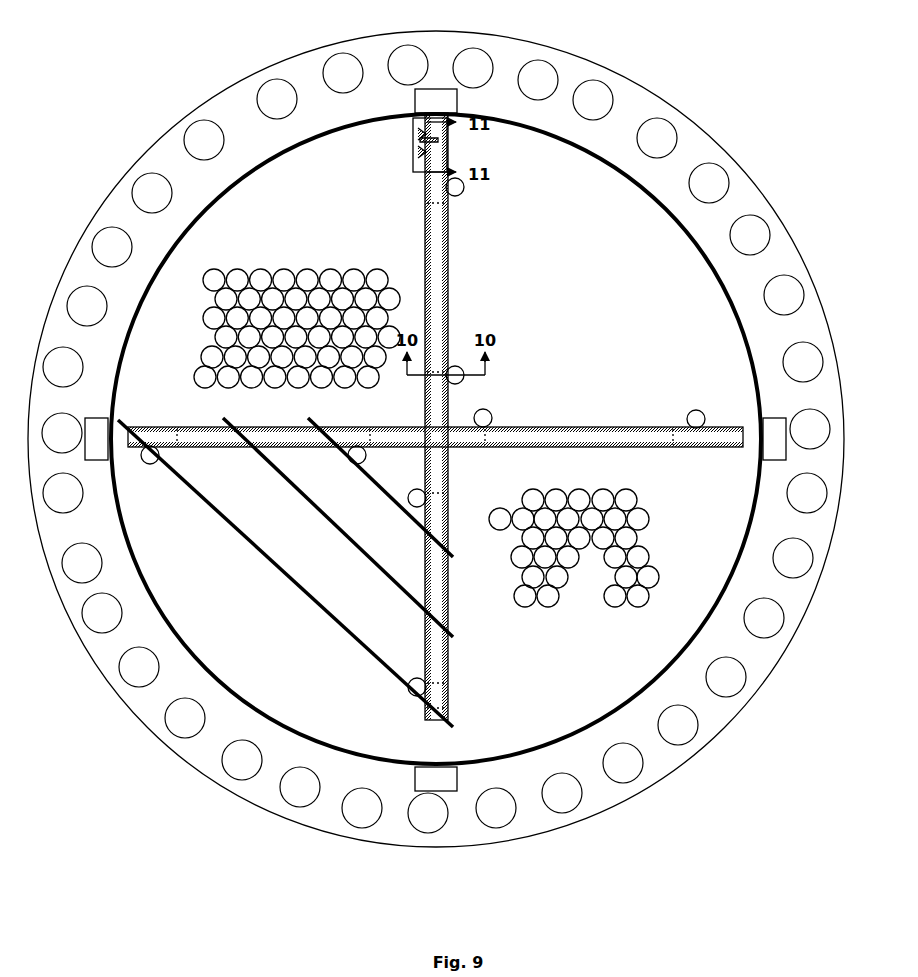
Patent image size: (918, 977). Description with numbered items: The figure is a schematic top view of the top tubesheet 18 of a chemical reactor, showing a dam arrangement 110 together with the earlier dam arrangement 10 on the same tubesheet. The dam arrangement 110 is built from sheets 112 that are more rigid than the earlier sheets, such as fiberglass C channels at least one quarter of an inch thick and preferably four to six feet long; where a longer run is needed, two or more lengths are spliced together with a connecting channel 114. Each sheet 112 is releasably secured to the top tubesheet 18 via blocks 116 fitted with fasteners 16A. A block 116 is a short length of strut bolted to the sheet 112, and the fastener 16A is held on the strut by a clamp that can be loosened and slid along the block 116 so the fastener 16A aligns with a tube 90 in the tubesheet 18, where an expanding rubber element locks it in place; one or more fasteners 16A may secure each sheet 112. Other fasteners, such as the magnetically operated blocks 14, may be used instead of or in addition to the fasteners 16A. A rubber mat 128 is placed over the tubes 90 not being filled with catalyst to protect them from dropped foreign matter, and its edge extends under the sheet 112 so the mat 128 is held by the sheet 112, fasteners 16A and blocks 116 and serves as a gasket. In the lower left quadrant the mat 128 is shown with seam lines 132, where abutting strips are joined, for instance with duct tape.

The dam arrangement 10 is at (333, 113).
The magnetically operated blocks 14 is at (436, 89).
The top tubesheet 18 is at (351, 201).
The tube 90 is at (363, 352).
The dam arrangement 110 is at (481, 331).
The sheet 112 is at (436, 267).
The connecting channel 114 is at (413, 130).
The block 116 is at (432, 183).
The mat 128 is at (604, 250).
The seam lines 132 is at (420, 525).
The fastener 16A is at (455, 197).